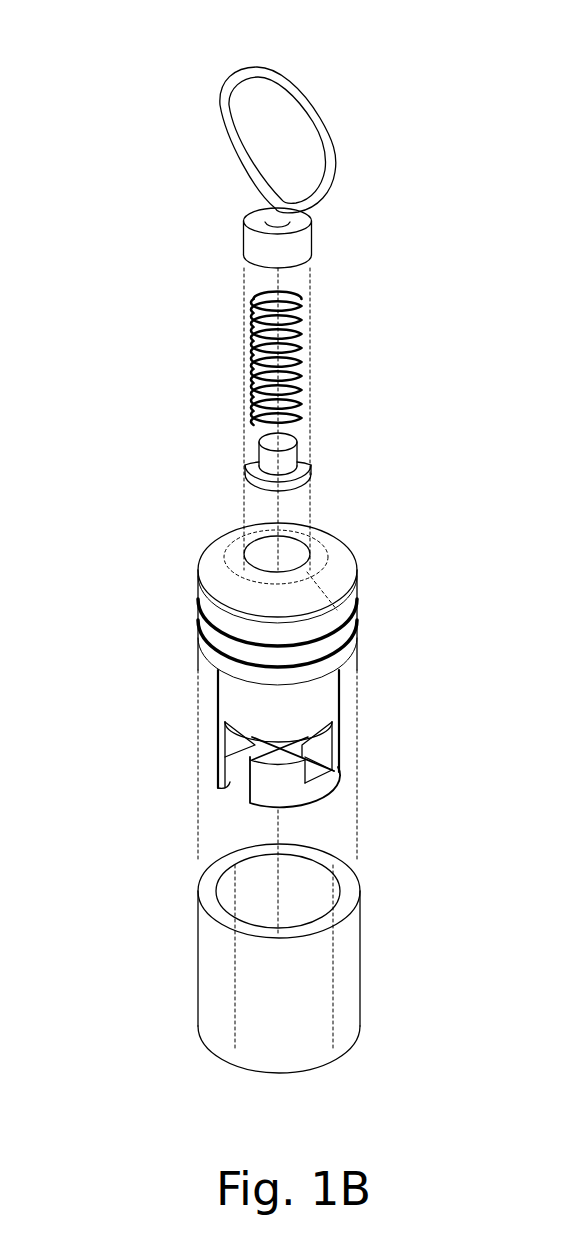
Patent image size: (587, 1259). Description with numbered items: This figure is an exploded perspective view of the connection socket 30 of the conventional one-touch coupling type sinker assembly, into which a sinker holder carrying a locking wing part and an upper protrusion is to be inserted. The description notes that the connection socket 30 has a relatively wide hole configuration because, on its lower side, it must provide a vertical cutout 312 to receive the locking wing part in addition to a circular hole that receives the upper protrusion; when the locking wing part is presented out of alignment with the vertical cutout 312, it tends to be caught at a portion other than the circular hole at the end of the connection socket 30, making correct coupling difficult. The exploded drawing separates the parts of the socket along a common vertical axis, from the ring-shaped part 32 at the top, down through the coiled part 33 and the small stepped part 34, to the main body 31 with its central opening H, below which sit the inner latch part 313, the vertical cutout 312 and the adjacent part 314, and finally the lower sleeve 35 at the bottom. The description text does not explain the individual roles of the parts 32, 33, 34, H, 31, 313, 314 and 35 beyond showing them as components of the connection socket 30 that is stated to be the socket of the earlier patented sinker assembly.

The connection socket 30 is at (302, 39).
The pull ring cap 32 is at (328, 193).
The spring 33 is at (302, 352).
The plug 34 is at (312, 462).
The hole H is at (292, 530).
The head body 31 is at (198, 636).
The cross latch 313 is at (250, 742).
The vertical cutout 312 is at (237, 780).
The side tab 314 is at (310, 778).
The cylindrical sleeve 35 is at (347, 967).